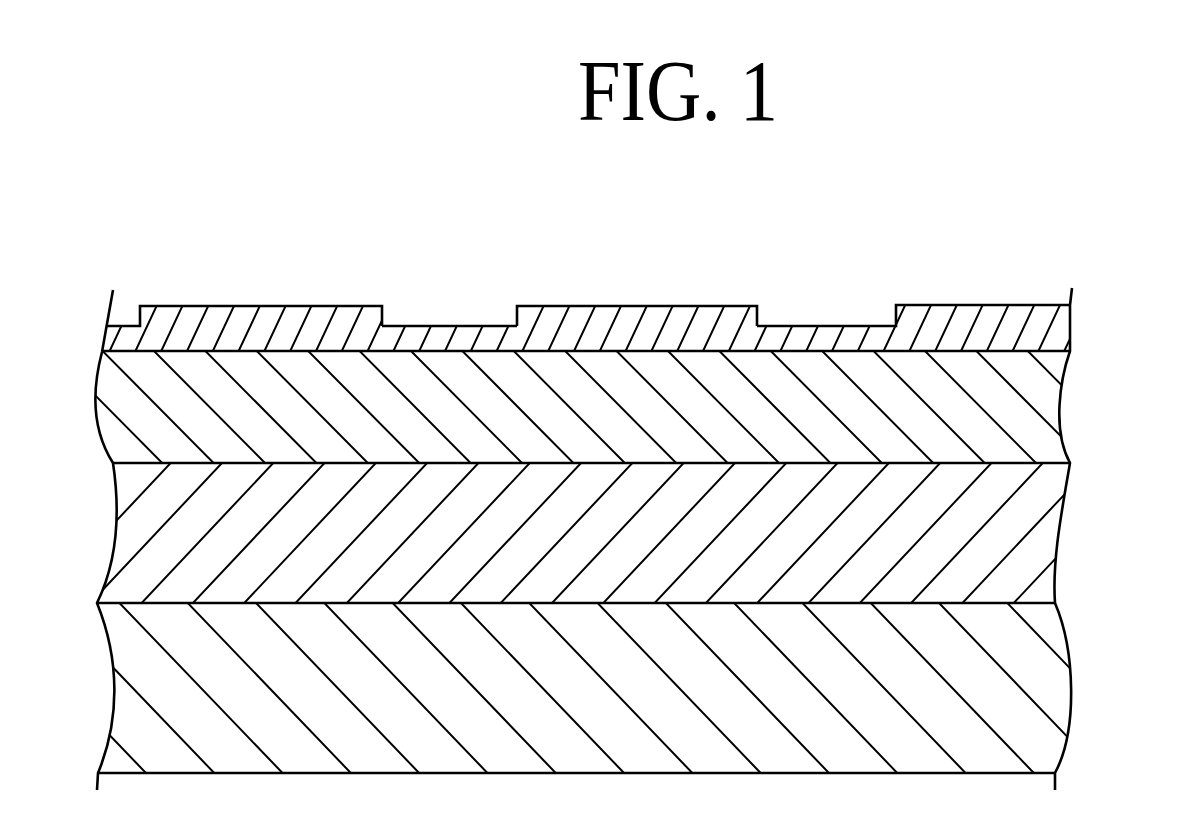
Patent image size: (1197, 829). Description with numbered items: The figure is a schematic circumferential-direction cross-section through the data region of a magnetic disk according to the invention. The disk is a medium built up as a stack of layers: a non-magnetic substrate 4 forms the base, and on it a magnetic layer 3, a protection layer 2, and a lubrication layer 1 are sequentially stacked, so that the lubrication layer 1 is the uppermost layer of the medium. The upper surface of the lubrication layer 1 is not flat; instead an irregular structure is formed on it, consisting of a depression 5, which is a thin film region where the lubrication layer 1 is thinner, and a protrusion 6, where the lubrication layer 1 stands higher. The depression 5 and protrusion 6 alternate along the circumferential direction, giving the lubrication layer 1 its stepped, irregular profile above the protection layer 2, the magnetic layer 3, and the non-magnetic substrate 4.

The lubrication layer 1 is at (642, 280).
The protection layer 2 is at (1047, 405).
The magnetic layer 3 is at (1047, 528).
The non-magnetic substrate 4 is at (1047, 688).
The depression 5 is at (448, 326).
The protrusion 6 is at (655, 306).